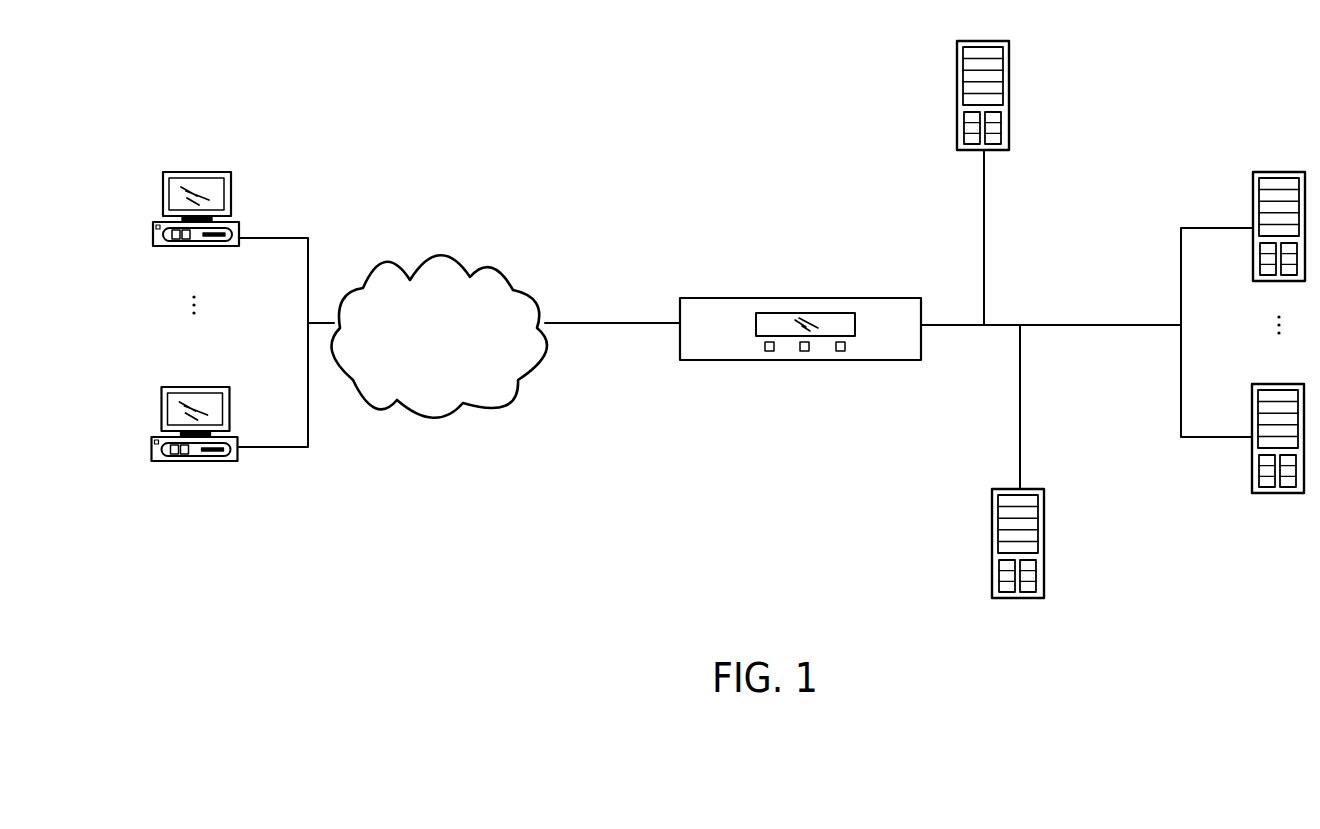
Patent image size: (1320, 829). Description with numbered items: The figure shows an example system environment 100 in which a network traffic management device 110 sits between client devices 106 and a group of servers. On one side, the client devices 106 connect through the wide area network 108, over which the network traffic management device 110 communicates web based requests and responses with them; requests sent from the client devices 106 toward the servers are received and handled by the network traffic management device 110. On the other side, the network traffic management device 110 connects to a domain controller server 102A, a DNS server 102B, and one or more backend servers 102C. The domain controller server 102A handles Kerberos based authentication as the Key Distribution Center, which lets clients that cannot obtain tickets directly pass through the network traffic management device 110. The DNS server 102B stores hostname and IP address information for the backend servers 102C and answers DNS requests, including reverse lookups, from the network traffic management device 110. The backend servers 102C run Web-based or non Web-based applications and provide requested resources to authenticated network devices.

The system environment 100 is at (1195, 57).
The domain controller server 102A is at (957, 68).
The DNS server 102B is at (992, 545).
The backend servers 102C is at (1253, 190).
The client devices 106 is at (240, 237).
The wide area network 108 is at (463, 366).
The network traffic management device 110 is at (805, 297).